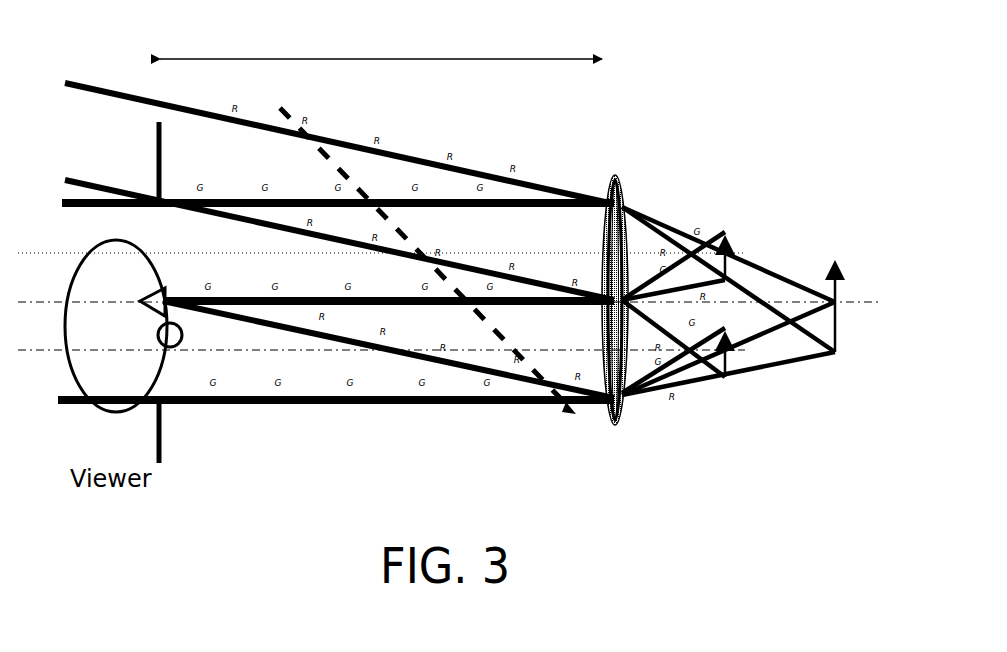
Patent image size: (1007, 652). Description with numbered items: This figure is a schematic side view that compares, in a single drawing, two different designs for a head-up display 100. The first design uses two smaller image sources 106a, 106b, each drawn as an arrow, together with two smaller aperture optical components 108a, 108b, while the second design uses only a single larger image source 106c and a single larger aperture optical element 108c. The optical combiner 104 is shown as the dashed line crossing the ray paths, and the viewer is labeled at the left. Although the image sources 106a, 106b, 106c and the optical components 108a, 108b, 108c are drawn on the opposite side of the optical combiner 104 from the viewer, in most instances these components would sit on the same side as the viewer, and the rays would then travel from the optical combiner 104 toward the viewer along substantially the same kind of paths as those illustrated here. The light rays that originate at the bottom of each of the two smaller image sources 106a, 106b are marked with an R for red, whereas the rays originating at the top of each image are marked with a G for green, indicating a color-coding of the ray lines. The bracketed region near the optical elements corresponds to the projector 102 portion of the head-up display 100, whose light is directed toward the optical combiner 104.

The head-up display 100 is at (408, 43).
The projector 102 is at (725, 122).
The optical combiner 104 is at (338, 150).
The first smaller image source 106a is at (722, 381).
The second smaller image source 106b is at (716, 231).
The single larger image source 106c is at (832, 338).
The first smaller aperture optical component 108a is at (597, 382).
The second smaller aperture optical component 108b is at (596, 224).
The single larger aperture optical element 108c is at (623, 422).